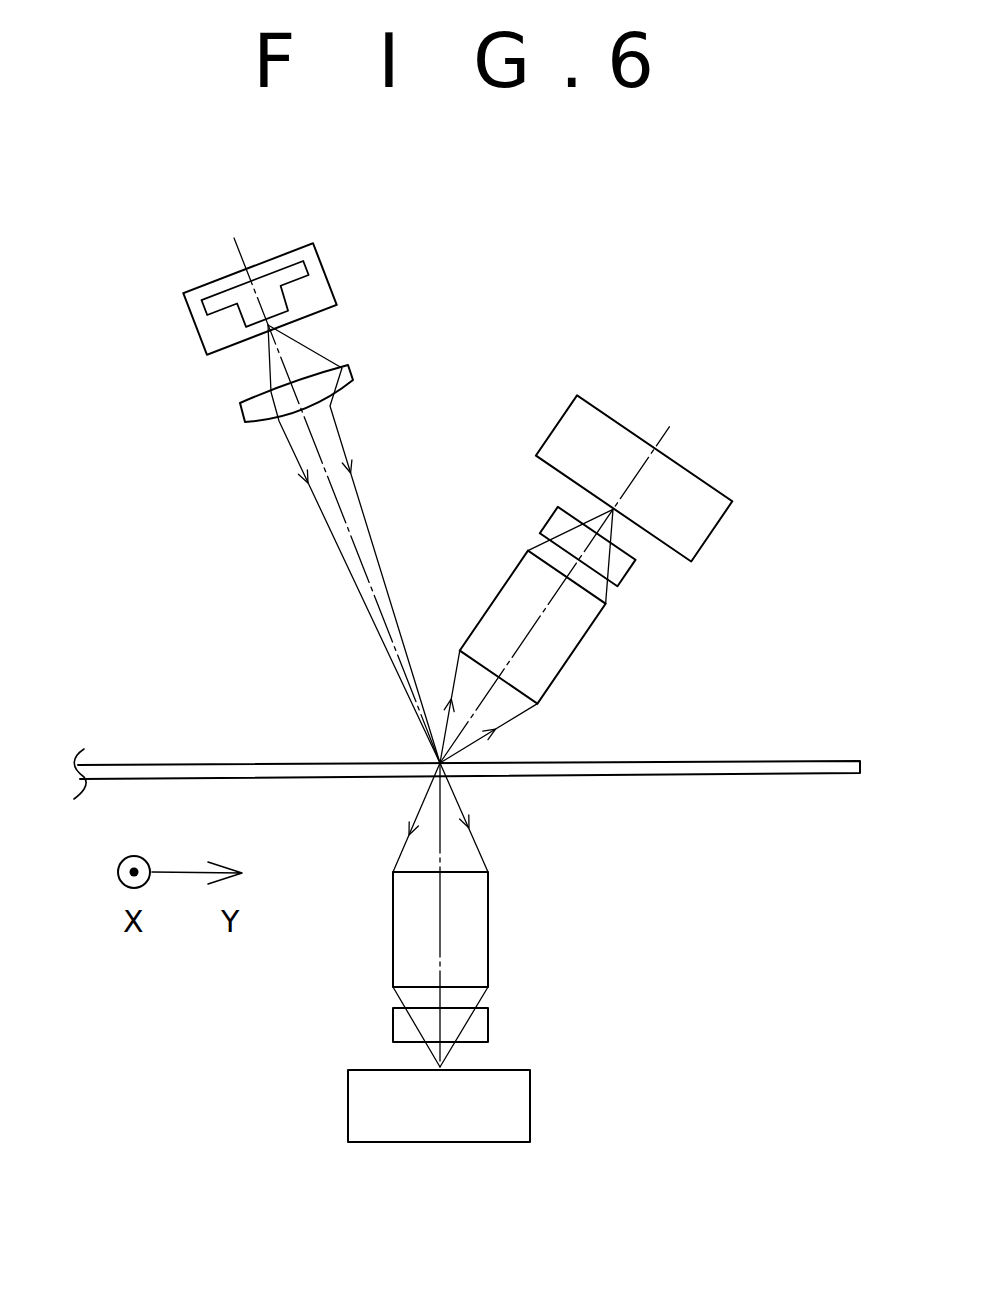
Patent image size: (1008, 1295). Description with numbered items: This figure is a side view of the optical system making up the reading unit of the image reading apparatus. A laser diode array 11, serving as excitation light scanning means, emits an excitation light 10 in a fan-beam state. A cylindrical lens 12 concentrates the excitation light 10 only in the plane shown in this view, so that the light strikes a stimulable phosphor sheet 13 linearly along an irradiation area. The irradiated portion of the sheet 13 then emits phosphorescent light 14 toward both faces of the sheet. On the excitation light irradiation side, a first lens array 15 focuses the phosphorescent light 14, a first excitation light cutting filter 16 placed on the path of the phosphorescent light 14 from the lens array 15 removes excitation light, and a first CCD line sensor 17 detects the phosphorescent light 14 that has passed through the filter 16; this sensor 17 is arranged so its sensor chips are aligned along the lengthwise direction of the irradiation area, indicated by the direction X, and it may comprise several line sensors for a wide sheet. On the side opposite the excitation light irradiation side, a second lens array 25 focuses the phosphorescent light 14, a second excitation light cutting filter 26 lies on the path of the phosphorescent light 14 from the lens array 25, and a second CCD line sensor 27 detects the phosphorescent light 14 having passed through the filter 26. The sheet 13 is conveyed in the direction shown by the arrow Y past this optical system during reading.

The excitation light 10 is at (312, 468).
The laser diode array 11 is at (327, 277).
The cylindrical lens 12 is at (353, 375).
The stimulable phosphor sheet 13 is at (780, 763).
The phosphorescent light 14 is at (523, 715).
The first lens array 15 is at (572, 643).
The first excitation light cutting filter 16 is at (630, 572).
The first CCD line sensor 17 is at (713, 510).
The second lens array 25 is at (478, 925).
The second excitation light cutting filter 26 is at (478, 1027).
The second CCD line sensor 27 is at (515, 1115).